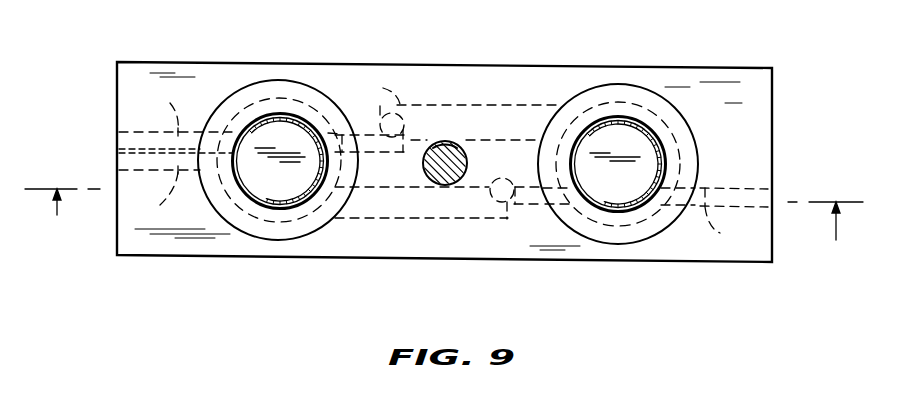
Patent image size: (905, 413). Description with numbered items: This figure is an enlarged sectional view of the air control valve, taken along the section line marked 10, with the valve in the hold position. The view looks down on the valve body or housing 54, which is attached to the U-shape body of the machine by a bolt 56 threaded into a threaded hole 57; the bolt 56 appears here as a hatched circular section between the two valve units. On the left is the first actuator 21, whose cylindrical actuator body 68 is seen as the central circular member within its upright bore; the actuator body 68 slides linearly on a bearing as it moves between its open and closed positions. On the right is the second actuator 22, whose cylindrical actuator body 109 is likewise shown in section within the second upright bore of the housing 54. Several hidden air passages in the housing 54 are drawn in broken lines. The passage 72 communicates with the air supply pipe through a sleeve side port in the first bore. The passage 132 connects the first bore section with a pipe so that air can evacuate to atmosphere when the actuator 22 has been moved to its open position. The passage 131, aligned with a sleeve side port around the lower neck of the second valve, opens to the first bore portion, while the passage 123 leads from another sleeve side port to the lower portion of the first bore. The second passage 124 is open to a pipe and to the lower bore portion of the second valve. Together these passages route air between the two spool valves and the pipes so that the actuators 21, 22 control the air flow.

The valve body 54 is at (150, 68).
The section line 10 is at (444, 229).
The first bearing assembly 21 is at (266, 128).
The actuator 22 is at (641, 122).
The cylindrical actuator body 68 is at (280, 185).
The cylindrical actuator body 109 is at (613, 183).
The bolt 56 is at (456, 142).
The threaded hole 57 is at (449, 141).
The passage 131 is at (382, 88).
The passage 132 is at (171, 104).
The passage 72 is at (166, 196).
The passage 123 is at (460, 212).
The second passage 124 is at (714, 219).